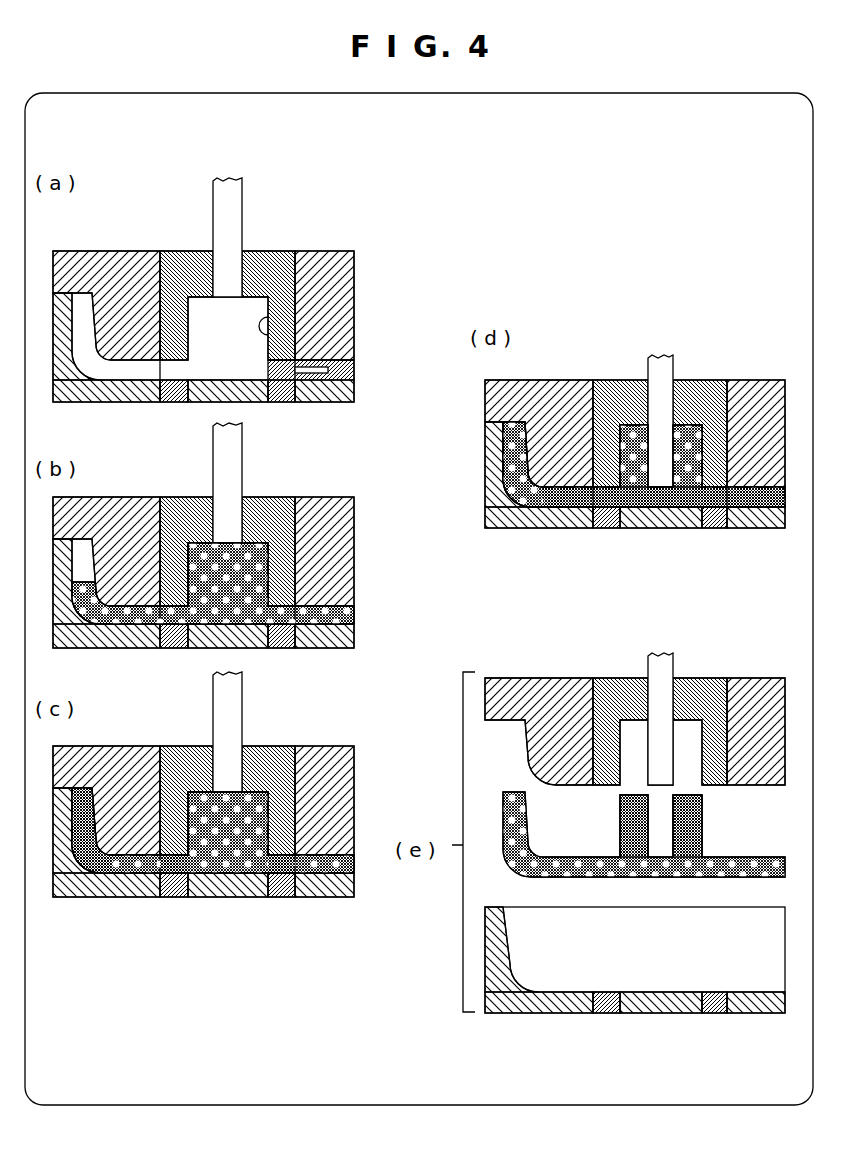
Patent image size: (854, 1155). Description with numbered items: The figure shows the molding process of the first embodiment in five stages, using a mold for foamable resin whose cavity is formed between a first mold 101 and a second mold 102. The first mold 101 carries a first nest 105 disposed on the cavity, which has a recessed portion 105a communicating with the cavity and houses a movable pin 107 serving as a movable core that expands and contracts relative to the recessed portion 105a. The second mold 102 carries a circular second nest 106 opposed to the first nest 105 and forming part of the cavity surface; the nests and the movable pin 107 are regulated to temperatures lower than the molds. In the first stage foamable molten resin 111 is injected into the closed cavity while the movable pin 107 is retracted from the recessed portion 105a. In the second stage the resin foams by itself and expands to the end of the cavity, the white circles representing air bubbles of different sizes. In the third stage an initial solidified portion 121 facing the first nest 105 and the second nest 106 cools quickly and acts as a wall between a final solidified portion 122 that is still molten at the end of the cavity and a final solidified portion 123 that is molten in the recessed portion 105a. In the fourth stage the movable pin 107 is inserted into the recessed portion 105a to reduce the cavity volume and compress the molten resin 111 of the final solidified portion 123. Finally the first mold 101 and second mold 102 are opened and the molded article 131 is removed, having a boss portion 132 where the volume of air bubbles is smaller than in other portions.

The first mold 101 is at (328, 260).
The second mold 102 is at (320, 404).
The first nest 105 is at (178, 250).
The recessed portion 105a is at (330, 333).
The second nest 106 is at (289, 403).
The movable pin 107 is at (227, 203).
The foamable molten resin 111 is at (350, 376).
The initial solidified portion 121 is at (177, 876).
The final solidified portion 122 is at (88, 880).
The final solidified portion 123 is at (224, 878).
The molded article 131 is at (768, 856).
The boss portion 132 is at (703, 814).